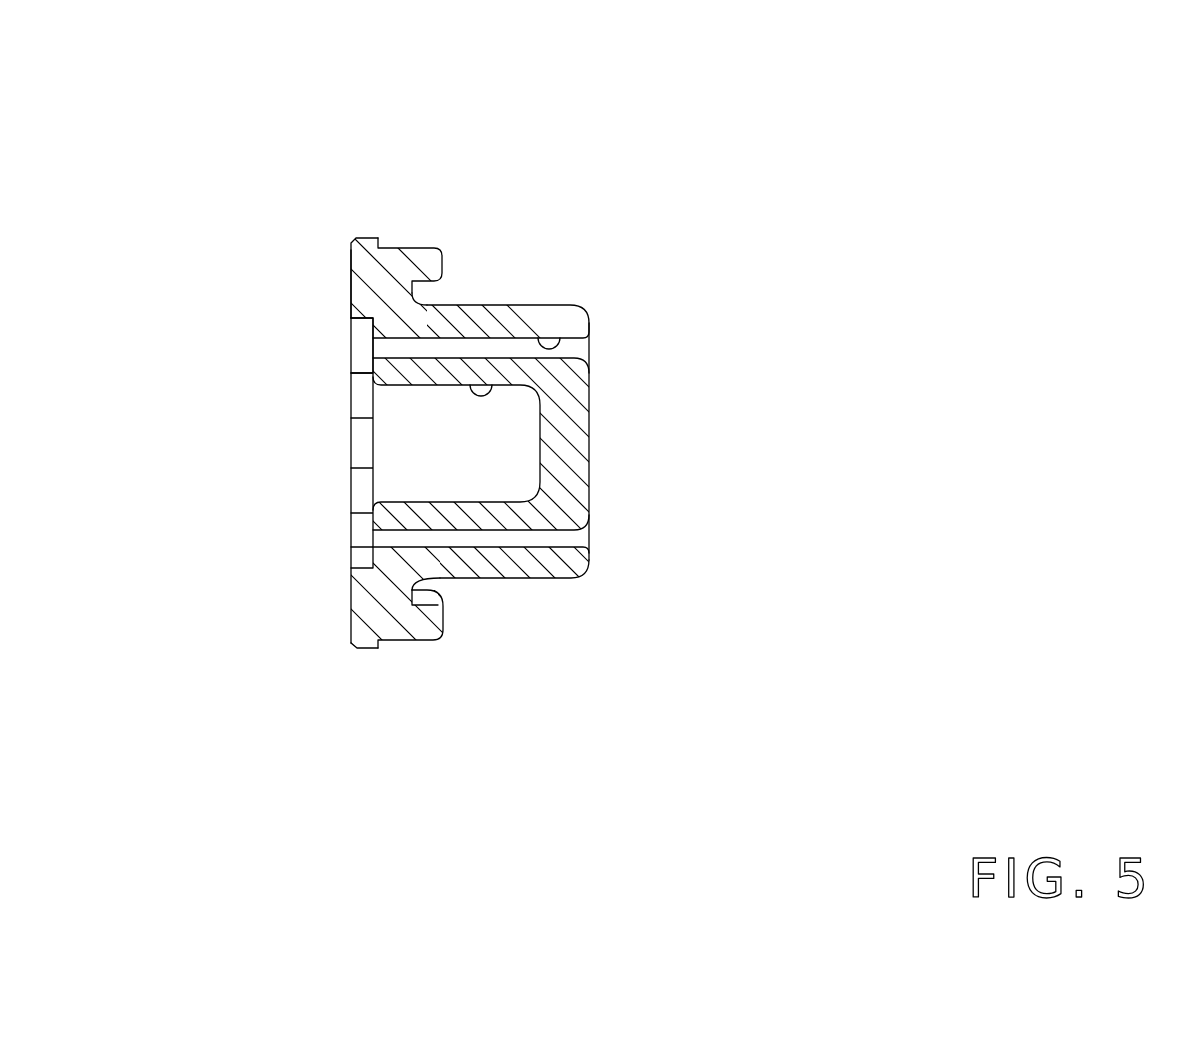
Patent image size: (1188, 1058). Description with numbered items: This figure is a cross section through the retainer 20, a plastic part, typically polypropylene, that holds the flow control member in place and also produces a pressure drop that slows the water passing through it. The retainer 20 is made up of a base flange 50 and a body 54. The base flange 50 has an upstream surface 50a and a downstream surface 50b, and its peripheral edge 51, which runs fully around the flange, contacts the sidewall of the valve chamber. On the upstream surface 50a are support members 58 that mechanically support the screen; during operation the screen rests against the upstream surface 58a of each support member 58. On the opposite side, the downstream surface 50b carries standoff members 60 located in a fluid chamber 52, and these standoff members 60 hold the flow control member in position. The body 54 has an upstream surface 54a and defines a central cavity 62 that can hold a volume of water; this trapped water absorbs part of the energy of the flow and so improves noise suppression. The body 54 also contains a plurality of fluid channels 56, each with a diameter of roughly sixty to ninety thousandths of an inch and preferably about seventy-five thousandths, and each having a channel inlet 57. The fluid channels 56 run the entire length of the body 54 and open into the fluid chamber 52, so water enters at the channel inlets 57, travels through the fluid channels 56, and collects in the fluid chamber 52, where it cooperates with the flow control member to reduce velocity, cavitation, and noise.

The retainer 20 is at (912, 193).
The base flange 50 is at (351, 610).
The upstream surface 50a is at (430, 303).
The downstream surface 50b is at (350, 283).
The peripheral edge 51 is at (363, 650).
The fluid chamber 52 is at (360, 335).
The body 54 is at (518, 572).
The upstream surface 54a is at (594, 474).
The fluid channels 56 is at (581, 318).
The channel inlet 57 is at (594, 548).
The support members 58 is at (398, 262).
The upstream surface 58a is at (445, 622).
The standoff members 60 is at (362, 440).
The central cavity 62 is at (493, 385).